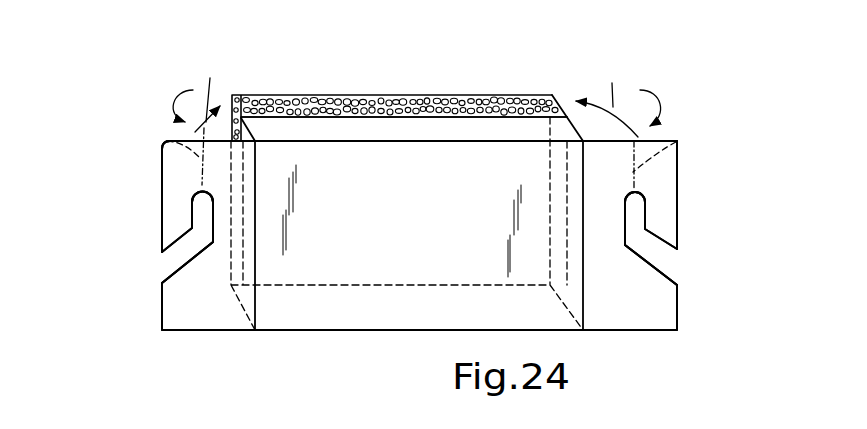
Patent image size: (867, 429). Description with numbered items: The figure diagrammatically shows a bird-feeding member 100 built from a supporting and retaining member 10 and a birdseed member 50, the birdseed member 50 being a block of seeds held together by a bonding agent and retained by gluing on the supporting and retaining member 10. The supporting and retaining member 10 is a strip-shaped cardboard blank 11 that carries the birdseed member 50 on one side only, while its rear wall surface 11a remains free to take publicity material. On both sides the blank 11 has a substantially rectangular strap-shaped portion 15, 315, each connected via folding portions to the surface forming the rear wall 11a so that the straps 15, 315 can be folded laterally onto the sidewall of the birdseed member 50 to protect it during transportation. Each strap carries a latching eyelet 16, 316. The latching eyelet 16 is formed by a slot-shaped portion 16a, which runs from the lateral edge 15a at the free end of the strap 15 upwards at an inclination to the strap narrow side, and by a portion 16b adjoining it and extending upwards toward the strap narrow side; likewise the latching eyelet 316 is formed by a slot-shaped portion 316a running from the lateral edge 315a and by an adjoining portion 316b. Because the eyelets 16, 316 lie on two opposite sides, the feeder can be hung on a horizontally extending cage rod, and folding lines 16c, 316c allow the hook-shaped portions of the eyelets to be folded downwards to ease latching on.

The supporting and retaining member 10 is at (330, 308).
The blank 11 is at (423, 130).
The rear wall surface 11a is at (448, 162).
The strap-shaped portion 15 is at (182, 158).
The lateral edge 15a is at (162, 316).
The latching eyelet 16 is at (207, 221).
The slot-shaped portion 16a is at (183, 253).
The portion 16b is at (200, 204).
The folding line 16c is at (162, 140).
The birdseed member 50 is at (380, 103).
The bird-feeding member 100 is at (347, 85).
The strap-shaped portion 315 is at (668, 165).
The lateral edge 315a is at (677, 316).
The latching eyelet 316 is at (632, 228).
The slot-shaped portion 316a is at (660, 258).
The portion 316b is at (637, 205).
The folding line 316c is at (674, 141).